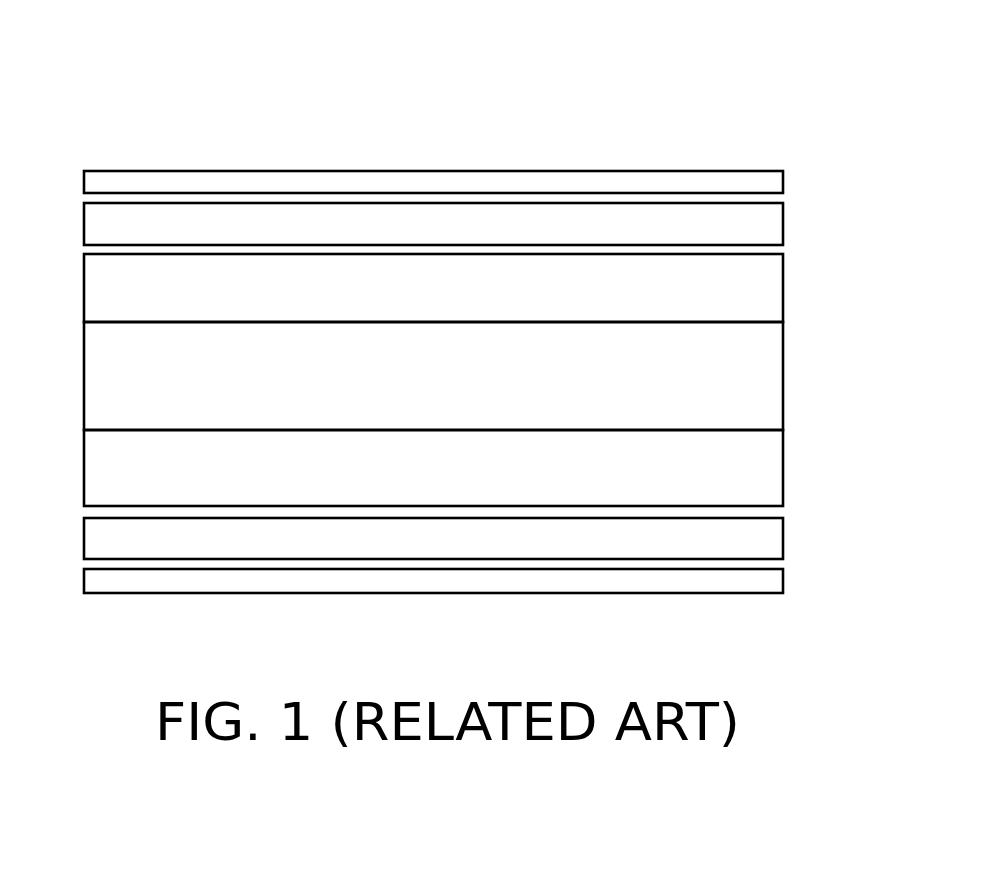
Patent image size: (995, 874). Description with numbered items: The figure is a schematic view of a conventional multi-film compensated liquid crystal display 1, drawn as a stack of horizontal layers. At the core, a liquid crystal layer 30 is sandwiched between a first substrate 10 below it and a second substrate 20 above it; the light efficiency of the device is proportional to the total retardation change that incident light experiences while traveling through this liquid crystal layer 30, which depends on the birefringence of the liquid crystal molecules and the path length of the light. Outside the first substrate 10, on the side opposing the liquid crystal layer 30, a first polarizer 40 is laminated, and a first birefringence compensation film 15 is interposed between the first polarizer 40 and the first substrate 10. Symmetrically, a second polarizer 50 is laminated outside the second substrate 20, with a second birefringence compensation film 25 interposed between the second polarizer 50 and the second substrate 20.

The liquid crystal display 1 is at (93, 113).
The second polarizer 50 is at (773, 182).
The second birefringence compensation film 25 is at (773, 224).
The second substrate 20 is at (773, 288).
The liquid crystal layer 30 is at (773, 367).
The first substrate 10 is at (773, 465).
The first birefringence compensation film 15 is at (773, 537).
The first polarizer 40 is at (773, 582).